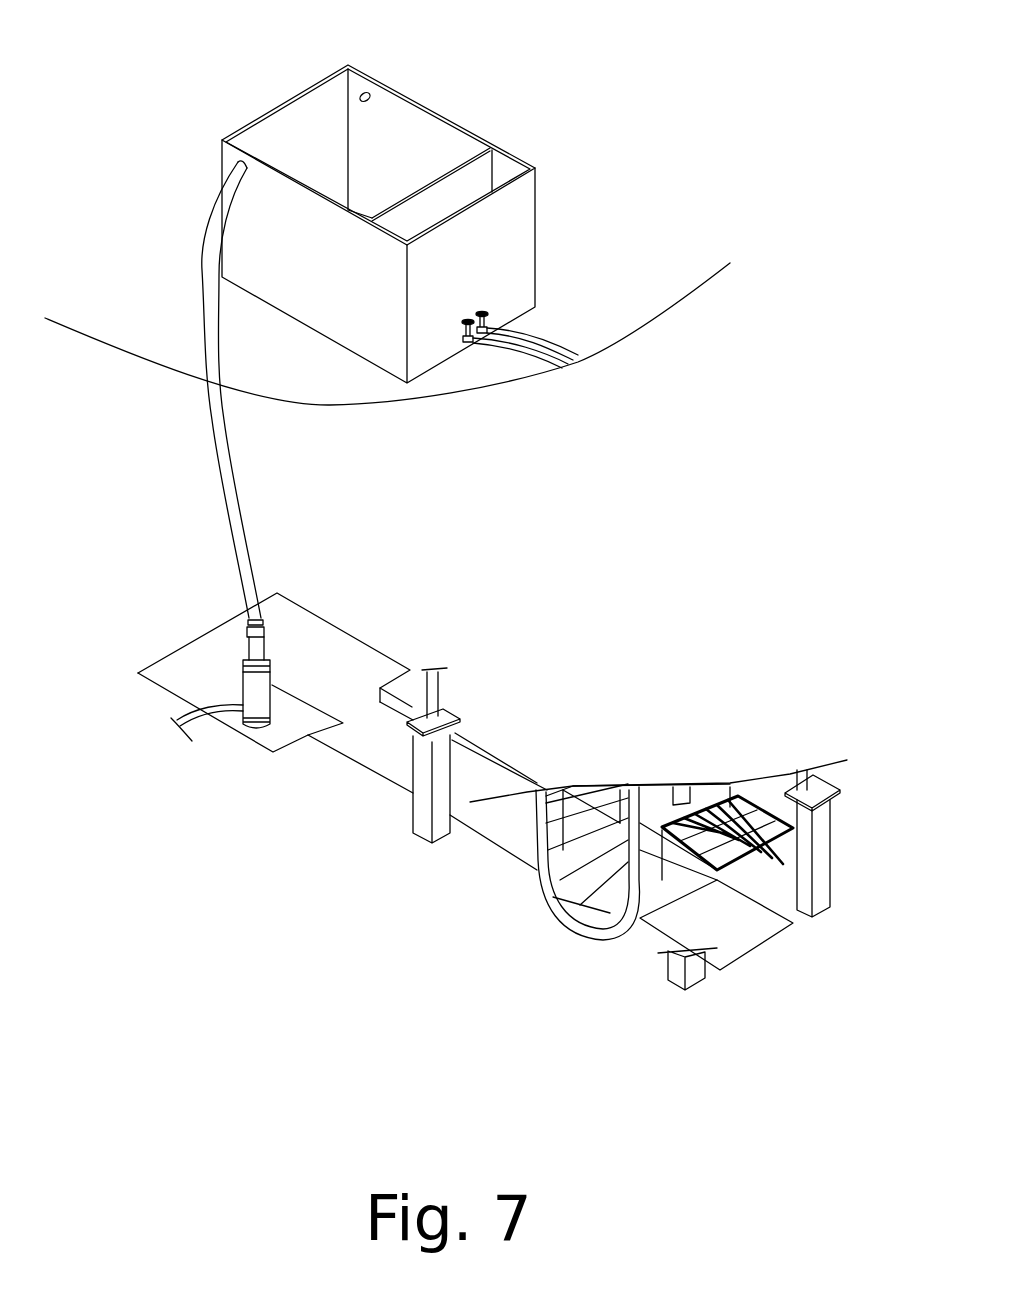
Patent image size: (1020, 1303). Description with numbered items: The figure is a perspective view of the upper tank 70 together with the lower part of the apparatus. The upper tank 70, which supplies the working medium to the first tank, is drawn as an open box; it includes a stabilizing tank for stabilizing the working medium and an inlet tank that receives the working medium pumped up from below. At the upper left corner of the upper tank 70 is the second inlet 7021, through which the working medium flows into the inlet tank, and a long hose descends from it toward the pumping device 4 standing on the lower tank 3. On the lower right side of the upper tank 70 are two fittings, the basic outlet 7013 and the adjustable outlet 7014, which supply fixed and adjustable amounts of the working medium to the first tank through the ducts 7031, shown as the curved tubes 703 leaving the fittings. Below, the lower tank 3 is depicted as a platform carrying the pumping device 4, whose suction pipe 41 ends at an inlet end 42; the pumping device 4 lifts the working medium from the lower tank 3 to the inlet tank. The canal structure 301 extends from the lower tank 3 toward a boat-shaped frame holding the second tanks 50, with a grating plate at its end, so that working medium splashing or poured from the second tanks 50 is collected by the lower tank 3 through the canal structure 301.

The upper tank 70 is at (498, 82).
The second inlet 7021 is at (222, 153).
The basic outlet 7013 is at (465, 339).
The adjustable outlet 7014 is at (493, 325).
The outlet tubes 703 is at (516, 352).
The ducts 7031 is at (493, 343).
The lower tank 3 is at (337, 657).
The canal structure 301 is at (398, 747).
The pumping device 4 is at (256, 712).
The suction pipe 41 is at (175, 714).
The inlet end 42 is at (200, 727).
The second tanks 50 is at (760, 795).